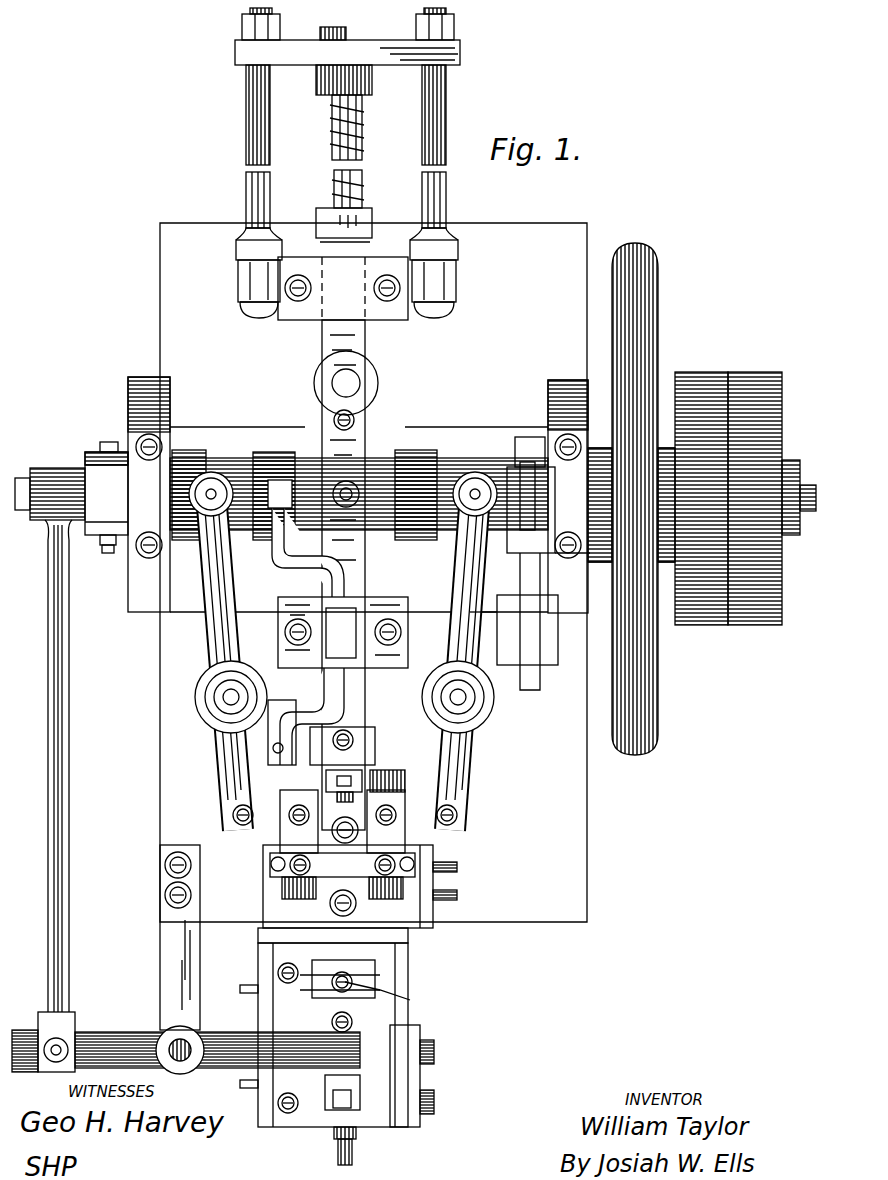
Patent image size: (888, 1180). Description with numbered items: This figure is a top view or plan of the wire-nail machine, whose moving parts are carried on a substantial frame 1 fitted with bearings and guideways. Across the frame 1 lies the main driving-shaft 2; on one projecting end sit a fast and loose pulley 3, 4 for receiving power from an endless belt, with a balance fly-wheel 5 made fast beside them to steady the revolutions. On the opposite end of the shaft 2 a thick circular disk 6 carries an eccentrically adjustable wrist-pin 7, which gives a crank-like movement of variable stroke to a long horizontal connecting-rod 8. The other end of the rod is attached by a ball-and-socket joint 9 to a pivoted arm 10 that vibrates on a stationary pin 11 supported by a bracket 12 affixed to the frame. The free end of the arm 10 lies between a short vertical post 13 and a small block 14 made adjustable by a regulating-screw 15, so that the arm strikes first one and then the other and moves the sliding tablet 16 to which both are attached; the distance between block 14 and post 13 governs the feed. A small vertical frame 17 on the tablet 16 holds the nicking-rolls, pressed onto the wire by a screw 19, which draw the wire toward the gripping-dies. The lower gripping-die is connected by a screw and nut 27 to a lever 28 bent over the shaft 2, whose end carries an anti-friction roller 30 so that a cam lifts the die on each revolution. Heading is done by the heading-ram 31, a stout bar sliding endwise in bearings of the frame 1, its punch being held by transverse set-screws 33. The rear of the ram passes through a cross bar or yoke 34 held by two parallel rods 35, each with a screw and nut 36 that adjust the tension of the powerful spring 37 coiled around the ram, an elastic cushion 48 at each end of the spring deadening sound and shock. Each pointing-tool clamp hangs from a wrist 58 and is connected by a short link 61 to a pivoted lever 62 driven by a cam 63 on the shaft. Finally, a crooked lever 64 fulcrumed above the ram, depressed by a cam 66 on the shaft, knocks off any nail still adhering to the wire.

The frame 1 is at (373, 572).
The main driving-shaft 2 is at (422, 505).
The fast pulley 3 is at (701, 483).
The loose pulley 4 is at (772, 483).
The balance fly-wheel 5 is at (643, 499).
The circular disk 6 is at (105, 490).
The wrist-pin 7 is at (46, 486).
The connecting-rod 8 is at (68, 766).
The ball-and-socket joint 9 is at (43, 1042).
The pivoted arm 10 is at (217, 1038).
The stationary pin 11 is at (190, 1062).
The bracket 12 is at (165, 937).
The vertical post 13 is at (356, 1023).
The block 14 is at (342, 1089).
The regulating-screw 15 is at (355, 1146).
The sliding tablet 16 is at (397, 1076).
The vertical frame 17 is at (340, 968).
The screw 19 is at (391, 998).
The screw and nut 27 is at (530, 452).
The lever 28 is at (530, 578).
The anti-friction roller 30 is at (532, 496).
The heading-ram 31 is at (343, 543).
The transverse set-screws 33 is at (356, 764).
The cross bar or yoke 34 is at (347, 41).
The parallel rods 35 is at (347, 191).
The screw and nut 36 is at (344, 24).
The spring 37 is at (359, 151).
The elastic cushion 48 is at (330, 98).
The wrist 58 is at (393, 771).
The link 61 is at (345, 841).
The pivoted lever 62 is at (347, 651).
The cam 63 is at (316, 484).
The crooked lever 64 is at (306, 636).
The cam 66 is at (274, 484).